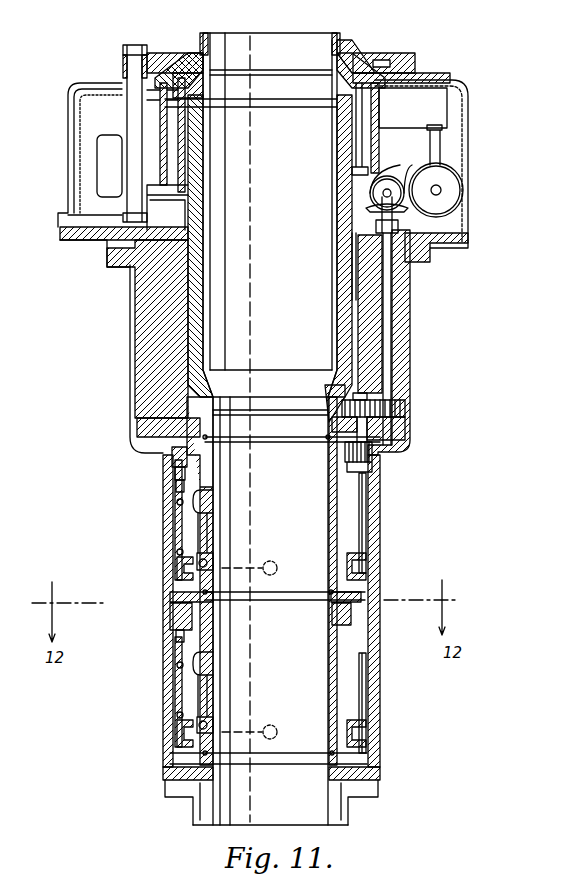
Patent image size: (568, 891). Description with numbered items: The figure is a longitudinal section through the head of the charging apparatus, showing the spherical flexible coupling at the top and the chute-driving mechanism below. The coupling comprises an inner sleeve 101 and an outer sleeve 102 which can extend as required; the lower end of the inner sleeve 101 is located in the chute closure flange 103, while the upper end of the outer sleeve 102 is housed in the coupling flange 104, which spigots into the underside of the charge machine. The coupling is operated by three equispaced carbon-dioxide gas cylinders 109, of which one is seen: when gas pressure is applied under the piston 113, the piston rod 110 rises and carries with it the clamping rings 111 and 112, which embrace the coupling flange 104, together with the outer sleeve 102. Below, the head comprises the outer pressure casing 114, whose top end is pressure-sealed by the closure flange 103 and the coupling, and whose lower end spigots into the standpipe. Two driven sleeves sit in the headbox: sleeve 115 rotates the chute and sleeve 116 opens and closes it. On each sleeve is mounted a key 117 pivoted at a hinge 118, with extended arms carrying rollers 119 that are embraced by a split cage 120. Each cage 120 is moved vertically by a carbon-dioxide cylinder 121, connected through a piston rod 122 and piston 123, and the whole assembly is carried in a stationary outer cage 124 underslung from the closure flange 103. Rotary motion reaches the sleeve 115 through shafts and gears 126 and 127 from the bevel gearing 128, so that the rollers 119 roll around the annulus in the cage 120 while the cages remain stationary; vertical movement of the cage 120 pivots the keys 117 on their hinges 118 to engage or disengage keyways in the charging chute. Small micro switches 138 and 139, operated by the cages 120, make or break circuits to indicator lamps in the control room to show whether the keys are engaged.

The inner sleeve 101 is at (344, 338).
The outer sleeve 102 is at (347, 130).
The flange 103 is at (162, 397).
The coupling flange 104 is at (343, 62).
The gas cylinder 109 is at (118, 160).
The piston rod 110 is at (133, 110).
The clamping ring 111 is at (402, 79).
The clamping ring 112 is at (397, 54).
The piston 113 is at (100, 233).
The outer pressure casing 114 is at (379, 565).
The driven sleeve 115 is at (335, 458).
The driven sleeve 116 is at (331, 640).
The key 117 is at (213, 510).
The hinge 118 is at (213, 560).
The roller 119 is at (282, 560).
The split cage 120 is at (177, 523).
The cylinder 121 is at (170, 468).
The piston rod 122 is at (173, 500).
The piston 123 is at (168, 480).
The outer cage 124 is at (163, 563).
The gear 126 is at (374, 458).
The gear 127 is at (388, 335).
The bevel gearing 128 is at (407, 211).
The micro switch 138 is at (372, 502).
The micro switch 139 is at (367, 660).